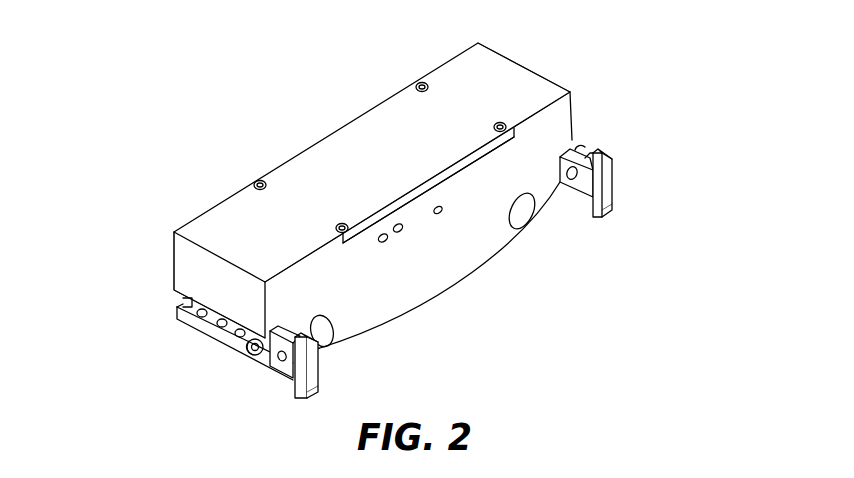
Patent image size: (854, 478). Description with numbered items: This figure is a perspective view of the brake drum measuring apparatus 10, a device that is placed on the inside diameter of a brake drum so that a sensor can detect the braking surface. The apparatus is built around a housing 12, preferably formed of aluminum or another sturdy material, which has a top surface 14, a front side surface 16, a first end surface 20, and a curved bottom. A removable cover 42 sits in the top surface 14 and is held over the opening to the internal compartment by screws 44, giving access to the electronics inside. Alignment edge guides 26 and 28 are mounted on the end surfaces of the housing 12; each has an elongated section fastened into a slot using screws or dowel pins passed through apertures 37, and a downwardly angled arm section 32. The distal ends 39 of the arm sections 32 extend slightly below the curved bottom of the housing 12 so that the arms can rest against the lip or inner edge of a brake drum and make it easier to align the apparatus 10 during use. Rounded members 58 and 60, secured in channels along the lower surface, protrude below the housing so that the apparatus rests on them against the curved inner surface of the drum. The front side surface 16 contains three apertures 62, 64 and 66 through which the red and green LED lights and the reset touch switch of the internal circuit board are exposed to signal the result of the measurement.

The brake drum measuring apparatus 10 is at (114, 92).
The housing 12 is at (486, 313).
The top surface 14 is at (493, 77).
The front side surface 16 is at (460, 265).
The first end surface 20 is at (200, 272).
The alignment edge guide 26 is at (293, 363).
The alignment edge guide 28 is at (597, 152).
The angled arm section 32 is at (303, 373).
The apertures 37 is at (200, 317).
The distal ends 39 is at (317, 397).
The removable cover 42 is at (340, 160).
The screws 44 is at (419, 83).
The member 58 is at (330, 347).
The member 60 is at (520, 215).
The aperture 62 is at (385, 242).
The aperture 64 is at (401, 232).
The aperture 66 is at (441, 213).